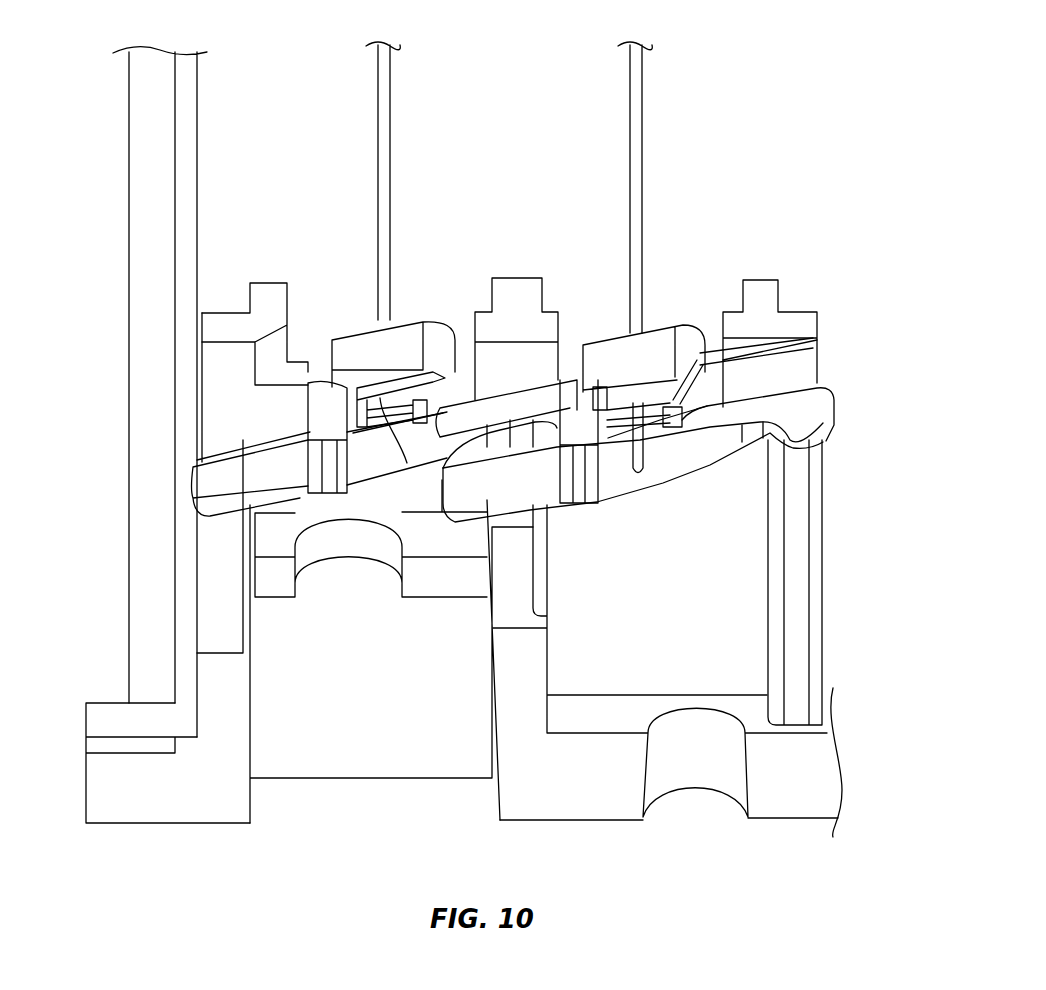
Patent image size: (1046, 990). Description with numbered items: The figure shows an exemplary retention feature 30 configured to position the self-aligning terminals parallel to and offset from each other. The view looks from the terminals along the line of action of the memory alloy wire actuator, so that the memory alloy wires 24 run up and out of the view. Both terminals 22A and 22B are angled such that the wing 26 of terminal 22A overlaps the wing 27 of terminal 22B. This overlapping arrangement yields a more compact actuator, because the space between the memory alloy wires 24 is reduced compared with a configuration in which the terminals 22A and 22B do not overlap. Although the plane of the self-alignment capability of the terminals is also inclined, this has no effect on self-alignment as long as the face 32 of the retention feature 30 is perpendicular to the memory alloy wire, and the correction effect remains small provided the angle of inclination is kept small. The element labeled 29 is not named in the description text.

The terminal 22A is at (383, 486).
The terminal 22B is at (667, 484).
The memory alloy wire 24 is at (388, 170).
The wing 26 is at (543, 403).
The wing 27 is at (225, 480).
The clamp member 29 is at (400, 352).
The retention feature 30 is at (262, 265).
The face 32 is at (225, 428).